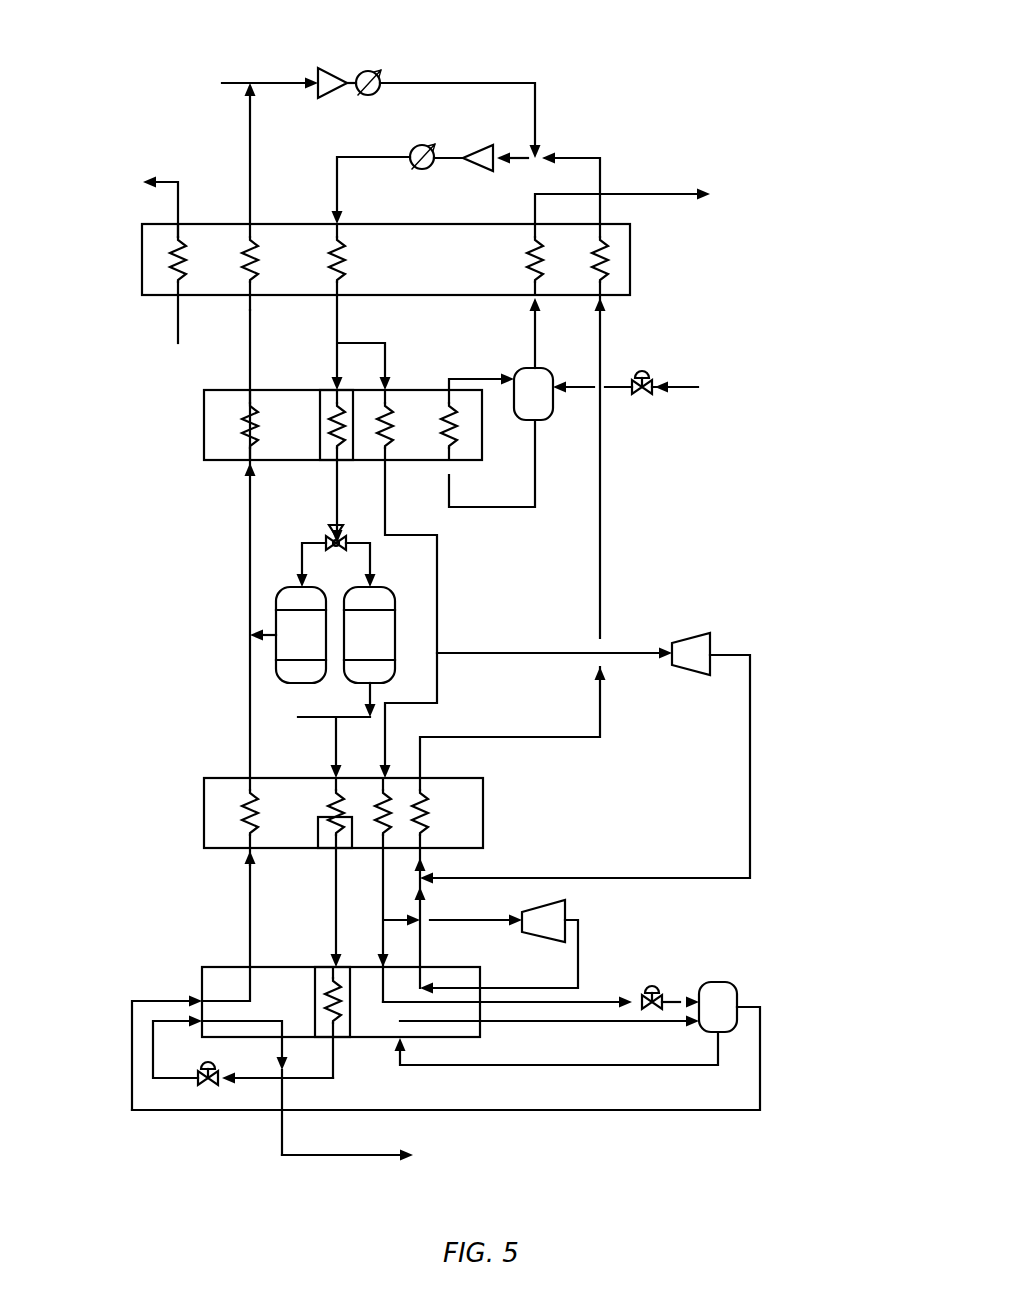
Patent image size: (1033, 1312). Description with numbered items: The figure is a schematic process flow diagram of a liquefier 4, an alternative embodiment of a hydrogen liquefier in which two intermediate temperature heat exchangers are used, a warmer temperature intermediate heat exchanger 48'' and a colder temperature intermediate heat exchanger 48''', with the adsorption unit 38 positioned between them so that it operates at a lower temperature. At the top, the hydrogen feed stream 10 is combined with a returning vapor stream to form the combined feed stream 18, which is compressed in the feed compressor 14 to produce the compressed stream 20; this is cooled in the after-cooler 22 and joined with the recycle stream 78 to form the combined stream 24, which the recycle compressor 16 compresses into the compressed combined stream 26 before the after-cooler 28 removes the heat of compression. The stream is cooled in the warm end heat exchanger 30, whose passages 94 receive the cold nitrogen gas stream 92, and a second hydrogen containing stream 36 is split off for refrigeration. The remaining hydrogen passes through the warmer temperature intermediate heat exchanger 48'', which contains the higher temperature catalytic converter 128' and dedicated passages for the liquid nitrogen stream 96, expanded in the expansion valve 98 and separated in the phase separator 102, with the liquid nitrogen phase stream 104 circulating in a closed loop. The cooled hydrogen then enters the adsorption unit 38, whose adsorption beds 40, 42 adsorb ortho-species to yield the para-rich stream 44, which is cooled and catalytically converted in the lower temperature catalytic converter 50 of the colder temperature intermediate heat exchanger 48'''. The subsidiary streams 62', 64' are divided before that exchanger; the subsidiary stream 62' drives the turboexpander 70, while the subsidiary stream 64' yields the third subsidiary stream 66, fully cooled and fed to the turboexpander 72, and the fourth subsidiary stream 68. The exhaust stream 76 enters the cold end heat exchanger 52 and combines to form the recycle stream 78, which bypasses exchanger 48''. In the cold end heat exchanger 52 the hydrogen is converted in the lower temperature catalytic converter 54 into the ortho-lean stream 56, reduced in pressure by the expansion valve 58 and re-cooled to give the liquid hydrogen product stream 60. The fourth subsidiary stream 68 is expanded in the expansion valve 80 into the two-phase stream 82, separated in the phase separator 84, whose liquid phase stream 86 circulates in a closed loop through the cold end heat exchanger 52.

The liquefier 4 is at (734, 137).
The hydrogen feed stream 10 is at (228, 78).
The combined feed stream 18 is at (283, 78).
The feed compressor 14 is at (322, 94).
The compressed stream 20 is at (365, 70).
The after-cooler 22 is at (384, 95).
The combined stream 24 is at (513, 165).
The recycle compressor 16 is at (481, 148).
The compressed combined stream 26 is at (450, 150).
The after-cooler 28 is at (422, 170).
The warm end heat exchanger 30 is at (632, 264).
The passages 94 is at (175, 265).
The cold nitrogen gas stream 92 is at (176, 328).
The second hydrogen containing stream 36 is at (383, 342).
The warmer temperature intermediate heat exchanger 48'' is at (302, 393).
The higher temperature catalytic converter 128' is at (305, 455).
The liquid nitrogen phase stream 104 is at (476, 375).
The phase separator 102 is at (537, 382).
The expansion valve 98 is at (645, 376).
The liquid nitrogen stream 96 is at (692, 384).
The recycle stream 78 is at (603, 510).
The adsorption unit 38 is at (348, 532).
The adsorption bed 40 is at (296, 688).
The adsorption bed 42 is at (386, 636).
The para-rich stream 44 is at (330, 750).
The first subsidiary stream 62' is at (554, 621).
The second subsidiary stream 64' is at (444, 619).
The turboexpander 70 is at (698, 638).
The colder temperature intermediate heat exchanger 48''' is at (302, 670).
The lower temperature catalytic converter 50 is at (316, 856).
The fourth subsidiary stream 68 is at (384, 946).
The third subsidiary stream 66 is at (470, 920).
The turboexpander 72 is at (566, 906).
The exhaust stream 76 is at (584, 970).
The cold end heat exchanger 52 is at (195, 975).
The lower temperature catalytic converter 54 is at (340, 1030).
The expansion valve 58 is at (204, 1066).
The ortho-lean stream 56 is at (245, 1078).
The liquid hydrogen product stream 60 is at (316, 1160).
The expansion valve 80 is at (656, 986).
The two-phase stream 82 is at (688, 990).
The phase separator 84 is at (745, 988).
The liquid phase stream 86 is at (628, 1038).